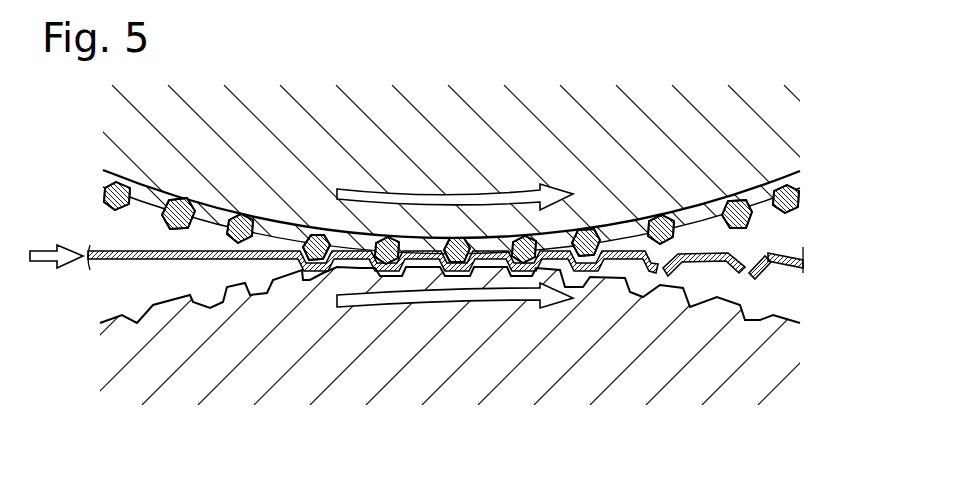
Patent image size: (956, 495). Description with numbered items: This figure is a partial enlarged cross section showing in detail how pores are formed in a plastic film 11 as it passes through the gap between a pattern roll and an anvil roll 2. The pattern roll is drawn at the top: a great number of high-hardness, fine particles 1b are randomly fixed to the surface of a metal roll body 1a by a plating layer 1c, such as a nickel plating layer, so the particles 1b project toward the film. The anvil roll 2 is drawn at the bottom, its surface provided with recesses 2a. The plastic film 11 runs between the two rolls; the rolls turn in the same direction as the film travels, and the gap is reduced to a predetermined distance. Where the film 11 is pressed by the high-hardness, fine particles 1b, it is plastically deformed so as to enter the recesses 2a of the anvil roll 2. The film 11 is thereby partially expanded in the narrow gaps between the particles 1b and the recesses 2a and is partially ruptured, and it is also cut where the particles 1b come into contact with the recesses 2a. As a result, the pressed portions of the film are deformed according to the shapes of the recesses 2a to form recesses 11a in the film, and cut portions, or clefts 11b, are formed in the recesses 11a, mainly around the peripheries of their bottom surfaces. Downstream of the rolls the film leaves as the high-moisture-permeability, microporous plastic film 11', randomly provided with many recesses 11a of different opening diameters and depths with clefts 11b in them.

The metal roll body 1a is at (466, 131).
The high-hardness, fine particles 1b is at (165, 218).
The plating layer 1c is at (212, 213).
The anvil roll 2 is at (460, 374).
The recesses of the anvil roll 2a is at (210, 298).
The plastic film 11 is at (362, 286).
The high-moisture-permeability, microporous plastic film 11' is at (806, 235).
The recesses 11a is at (766, 263).
The clefts 11b is at (743, 268).